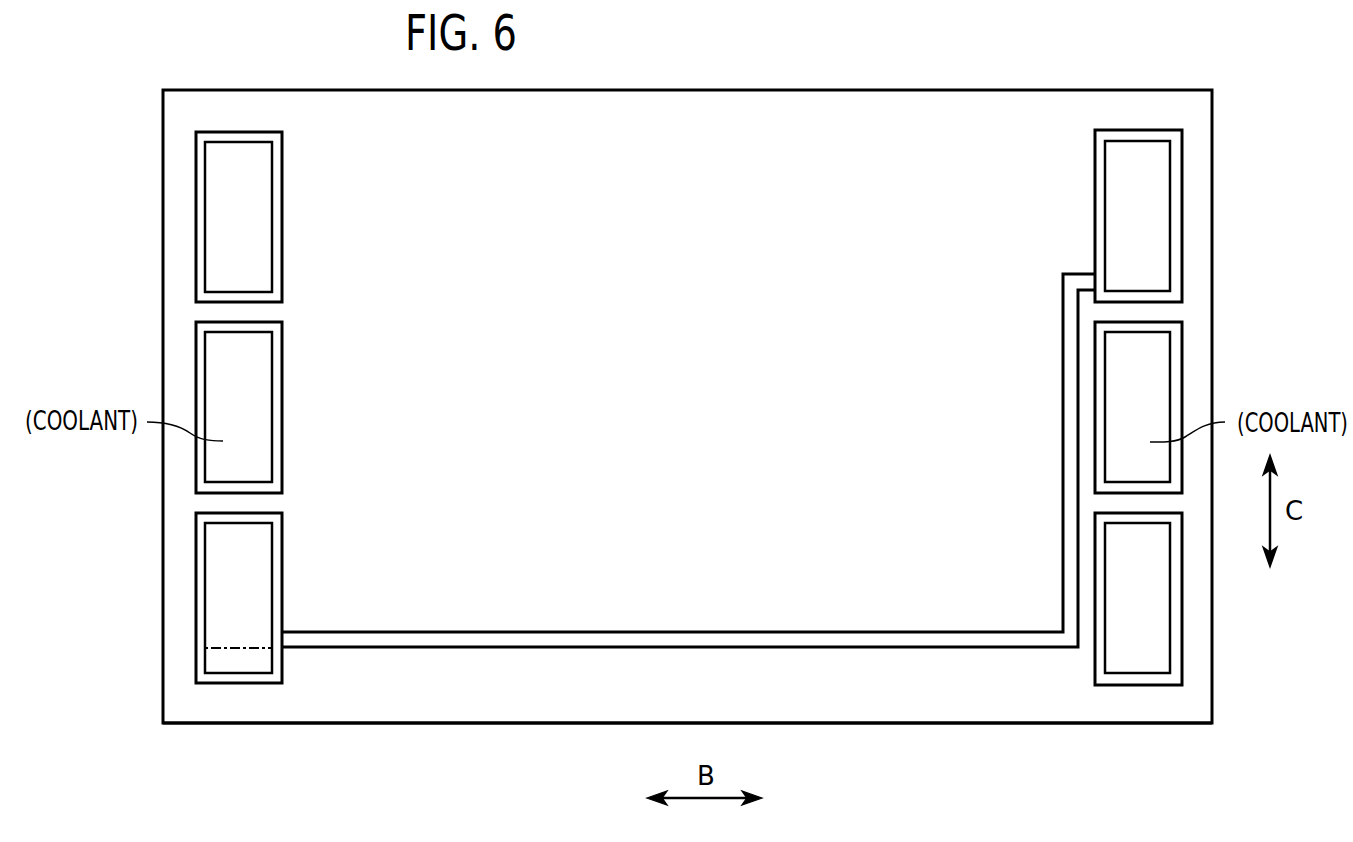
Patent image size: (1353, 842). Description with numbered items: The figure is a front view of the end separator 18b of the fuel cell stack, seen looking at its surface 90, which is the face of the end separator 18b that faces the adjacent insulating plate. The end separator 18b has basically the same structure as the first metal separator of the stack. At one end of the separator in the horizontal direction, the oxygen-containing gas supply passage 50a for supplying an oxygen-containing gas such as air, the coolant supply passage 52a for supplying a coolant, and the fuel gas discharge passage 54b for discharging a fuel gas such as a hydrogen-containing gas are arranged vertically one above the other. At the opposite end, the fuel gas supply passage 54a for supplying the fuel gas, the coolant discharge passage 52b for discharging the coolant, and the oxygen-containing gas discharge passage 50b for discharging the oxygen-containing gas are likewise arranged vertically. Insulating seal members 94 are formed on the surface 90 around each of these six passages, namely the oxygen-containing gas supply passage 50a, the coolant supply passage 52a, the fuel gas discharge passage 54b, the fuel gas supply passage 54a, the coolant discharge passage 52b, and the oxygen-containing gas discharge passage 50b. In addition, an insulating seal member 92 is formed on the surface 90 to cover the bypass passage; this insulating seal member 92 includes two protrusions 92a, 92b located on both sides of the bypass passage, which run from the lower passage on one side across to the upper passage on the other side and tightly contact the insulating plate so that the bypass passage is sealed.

The end separator 18b is at (908, 72).
The surface 90 is at (853, 703).
The insulating seal members 94 is at (282, 216).
The oxygen-containing gas supply passage 50a is at (238, 217).
The coolant supply passage 52a is at (238, 407).
The fuel gas discharge passage 54b is at (238, 598).
The fuel gas supply passage 54a is at (1137, 216).
The coolant discharge passage 52b is at (1137, 407).
The oxygen-containing gas discharge passage 50b is at (1137, 598).
The insulating seal member 92 is at (688, 461).
The protrusion 92a is at (638, 648).
The protrusion 92b is at (585, 632).